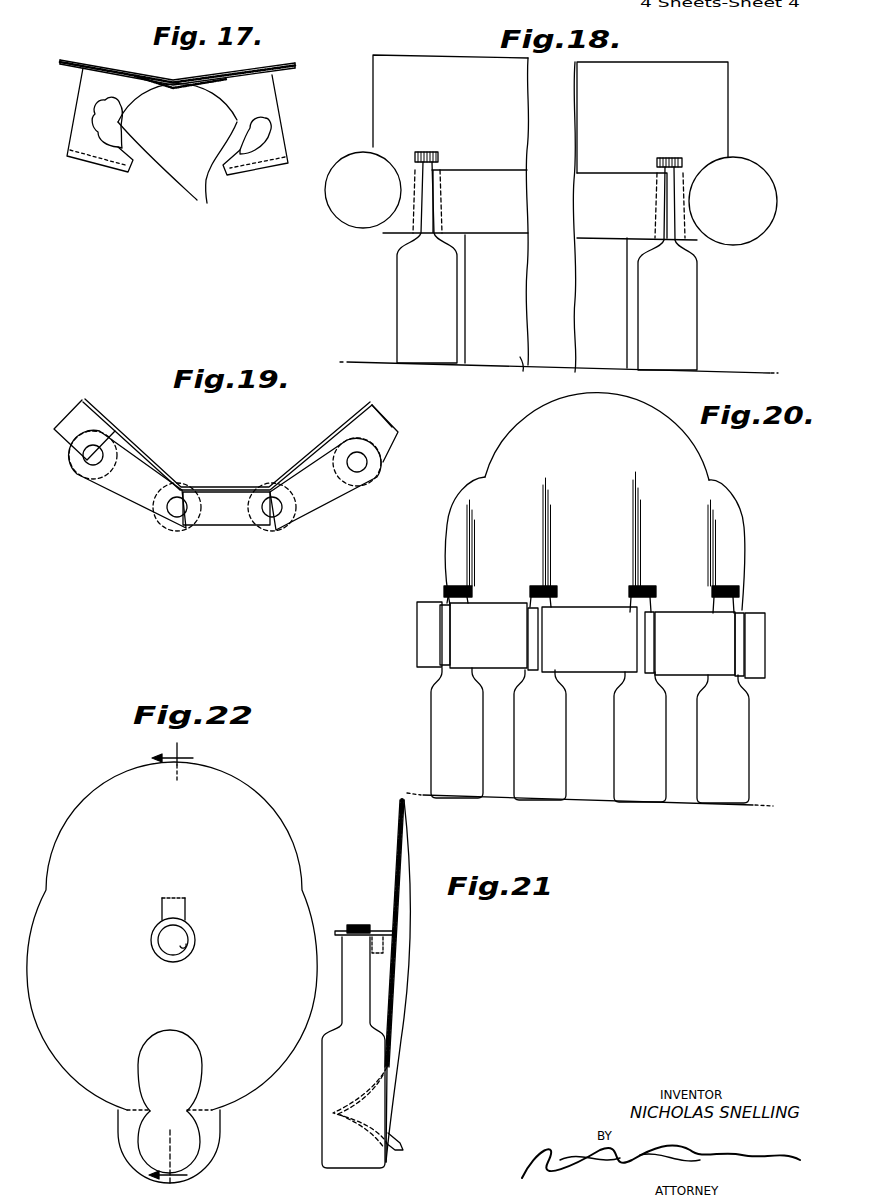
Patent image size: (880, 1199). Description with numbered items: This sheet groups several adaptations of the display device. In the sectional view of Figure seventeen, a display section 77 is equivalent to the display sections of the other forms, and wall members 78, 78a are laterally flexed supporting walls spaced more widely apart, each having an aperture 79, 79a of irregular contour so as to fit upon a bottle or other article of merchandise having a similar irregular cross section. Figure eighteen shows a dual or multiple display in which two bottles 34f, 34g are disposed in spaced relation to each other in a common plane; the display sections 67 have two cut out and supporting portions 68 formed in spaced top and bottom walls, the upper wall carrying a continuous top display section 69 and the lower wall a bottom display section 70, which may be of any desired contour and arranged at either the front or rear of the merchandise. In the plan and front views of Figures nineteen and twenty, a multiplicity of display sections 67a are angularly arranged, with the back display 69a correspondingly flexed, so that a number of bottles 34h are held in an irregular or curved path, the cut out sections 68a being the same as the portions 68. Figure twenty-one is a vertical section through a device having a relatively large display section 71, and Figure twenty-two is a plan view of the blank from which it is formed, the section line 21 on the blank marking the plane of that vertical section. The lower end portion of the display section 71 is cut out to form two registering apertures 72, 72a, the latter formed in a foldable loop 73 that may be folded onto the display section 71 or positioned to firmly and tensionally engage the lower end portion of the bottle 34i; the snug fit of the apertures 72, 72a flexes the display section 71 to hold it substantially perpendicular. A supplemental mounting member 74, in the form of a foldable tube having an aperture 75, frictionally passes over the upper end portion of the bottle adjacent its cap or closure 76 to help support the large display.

In FIG. 17, the display section 77 is at (257, 66).
In FIG. 17, the wall member 78 is at (283, 120).
In FIG. 17, the wall member 78a is at (112, 135).
In FIG. 17, the aperture 79 is at (223, 105).
In FIG. 17, the aperture 79a is at (177, 174).
In FIG. 18, the display section 67 is at (757, 183).
In FIG. 18, the cut out and supporting portion 68 is at (433, 192).
In FIG. 18, the top display section 69 is at (717, 102).
In FIG. 18, the bottom display section 70 is at (578, 350).
In FIG. 18, the bottle 34f is at (395, 300).
In FIG. 18, the bottle 34g is at (697, 313).
In FIG. 19, the bottles 34h is at (150, 520).
In FIG. 20, the bottles 34h is at (702, 790).
In FIG. 21, the bottle 34i is at (322, 1083).
In FIG. 19, the display section 67a is at (240, 527).
In FIG. 20, the display section 67a is at (600, 610).
In FIG. 19, the cut out section 68a is at (379, 470).
In FIG. 20, the cut out section 68a is at (655, 642).
In FIG. 19, the back display 69a is at (308, 468).
In FIG. 20, the back display 69a is at (687, 470).
In FIG. 22, the display section 71 is at (277, 850).
In FIG. 21, the display section 71 is at (397, 908).
In FIG. 22, the aperture 72 is at (200, 1063).
In FIG. 21, the aperture 72 is at (392, 1067).
In FIG. 22, the aperture 72a is at (200, 1144).
In FIG. 22, the foldable loop 73 is at (128, 1143).
In FIG. 21, the foldable loop 73 is at (388, 1150).
In FIG. 22, the supplemental mounting member 74 is at (180, 912).
In FIG. 21, the supplemental mounting member 74 is at (382, 930).
In FIG. 22, the aperture 75 is at (187, 943).
In FIG. 21, the aperture 75 is at (382, 953).
In FIG. 21, the cap or closure 76 is at (350, 923).
In FIG. 22, the section line 21 is at (166, 961).